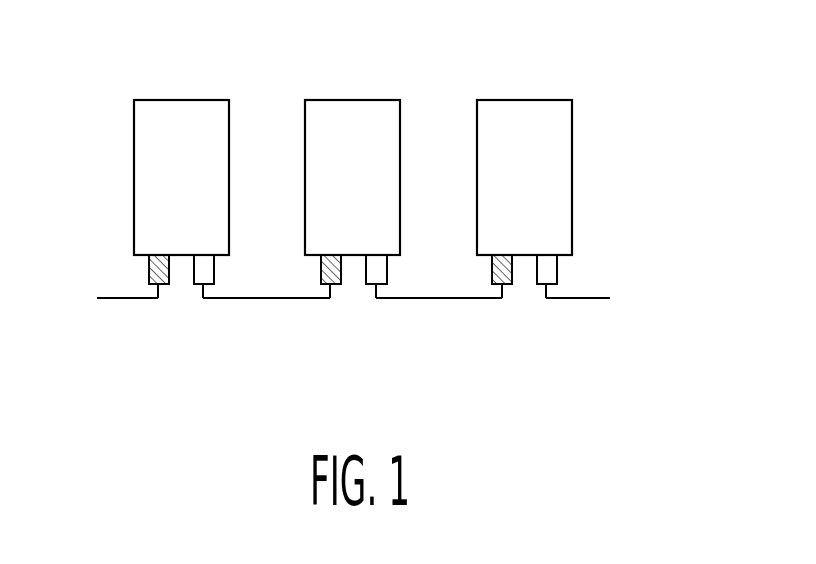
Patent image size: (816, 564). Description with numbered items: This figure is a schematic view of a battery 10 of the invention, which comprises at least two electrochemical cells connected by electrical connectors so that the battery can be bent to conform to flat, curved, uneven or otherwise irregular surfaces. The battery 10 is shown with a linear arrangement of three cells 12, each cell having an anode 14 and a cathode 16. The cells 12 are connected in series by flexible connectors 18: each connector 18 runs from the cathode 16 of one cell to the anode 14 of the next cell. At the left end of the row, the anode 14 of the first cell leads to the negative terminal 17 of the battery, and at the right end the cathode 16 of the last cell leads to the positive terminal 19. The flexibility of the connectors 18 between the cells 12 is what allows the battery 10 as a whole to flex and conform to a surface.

The battery 10 is at (619, 182).
The cells 12 is at (188, 100).
The anodes 14 is at (170, 287).
The cathodes 16 is at (194, 287).
The negative terminal 17 is at (128, 300).
The flexible connectors 18 is at (273, 300).
The positive terminal 19 is at (602, 300).